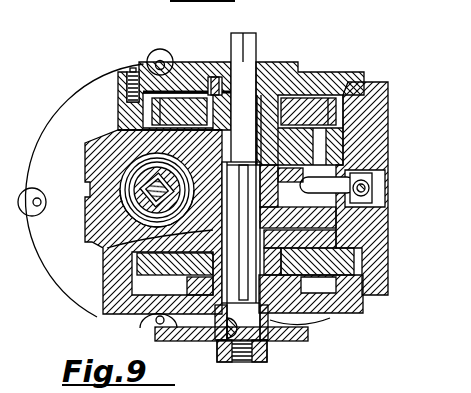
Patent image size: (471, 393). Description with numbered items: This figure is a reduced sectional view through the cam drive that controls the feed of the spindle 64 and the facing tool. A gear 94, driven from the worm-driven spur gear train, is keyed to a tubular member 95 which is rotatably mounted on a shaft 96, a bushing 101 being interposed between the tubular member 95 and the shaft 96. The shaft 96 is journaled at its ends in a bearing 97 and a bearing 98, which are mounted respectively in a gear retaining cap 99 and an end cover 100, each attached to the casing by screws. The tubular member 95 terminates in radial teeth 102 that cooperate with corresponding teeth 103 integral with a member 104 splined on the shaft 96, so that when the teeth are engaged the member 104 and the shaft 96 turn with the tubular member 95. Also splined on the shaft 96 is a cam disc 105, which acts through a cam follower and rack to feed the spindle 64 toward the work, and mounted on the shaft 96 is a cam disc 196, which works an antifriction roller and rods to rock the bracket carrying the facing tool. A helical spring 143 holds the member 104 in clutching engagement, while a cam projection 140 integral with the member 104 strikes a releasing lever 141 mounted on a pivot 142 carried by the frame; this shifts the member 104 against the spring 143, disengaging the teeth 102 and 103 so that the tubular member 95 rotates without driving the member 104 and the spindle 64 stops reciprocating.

The spindle 64 is at (152, 185).
The gear 94 is at (133, 97).
The tubular member 95 is at (269, 117).
The shaft 96 is at (243, 83).
The bearing 97 is at (213, 77).
The bearing 98 is at (188, 294).
The gear retaining cap 99 is at (182, 77).
The end cover 100 is at (135, 315).
The bushing 101 is at (162, 108).
The radial teeth 102 is at (339, 71).
The teeth 103 is at (212, 163).
The member 104 is at (213, 213).
The cam disc 105 is at (366, 290).
The cam projection 140 is at (309, 262).
The releasing lever 141 is at (352, 168).
The pivot 142 is at (320, 148).
The helical spring 143 is at (104, 265).
The cam disc 196 is at (306, 338).